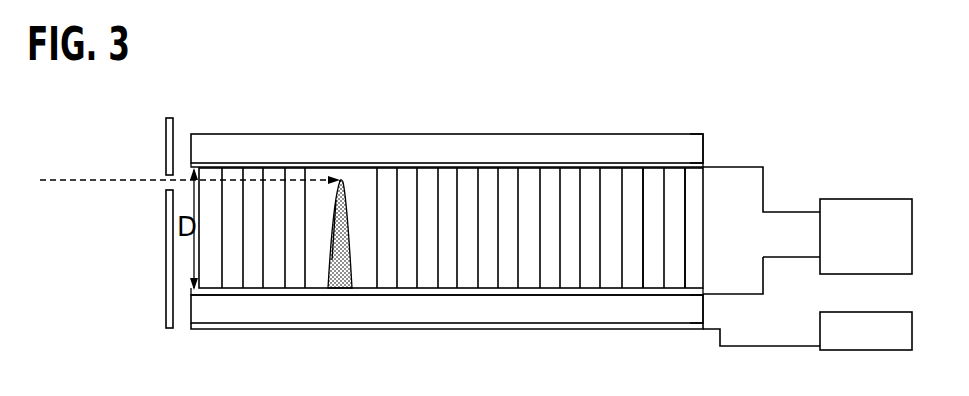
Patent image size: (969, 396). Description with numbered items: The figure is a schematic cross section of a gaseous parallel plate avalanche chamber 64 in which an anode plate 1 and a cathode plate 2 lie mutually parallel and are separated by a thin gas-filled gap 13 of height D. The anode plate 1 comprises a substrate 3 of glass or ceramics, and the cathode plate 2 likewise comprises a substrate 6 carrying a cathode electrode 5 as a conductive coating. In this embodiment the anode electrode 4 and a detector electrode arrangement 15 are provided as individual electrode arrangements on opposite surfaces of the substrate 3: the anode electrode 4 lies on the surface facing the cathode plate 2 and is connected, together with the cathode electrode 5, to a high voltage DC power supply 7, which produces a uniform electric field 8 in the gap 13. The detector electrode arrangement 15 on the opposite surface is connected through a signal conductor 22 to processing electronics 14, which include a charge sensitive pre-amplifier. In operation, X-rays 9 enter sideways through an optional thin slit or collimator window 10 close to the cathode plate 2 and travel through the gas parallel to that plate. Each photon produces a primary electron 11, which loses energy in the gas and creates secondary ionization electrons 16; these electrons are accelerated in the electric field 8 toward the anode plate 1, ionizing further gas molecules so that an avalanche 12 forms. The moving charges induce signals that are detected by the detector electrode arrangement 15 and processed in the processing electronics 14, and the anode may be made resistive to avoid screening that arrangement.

The anode plate 1 is at (396, 318).
The cathode plate 2 is at (394, 128).
The substrate 3 is at (698, 313).
The anode electrode 4 is at (705, 289).
The cathode electrode 5 is at (702, 170).
The substrate 6 is at (692, 150).
The high voltage DC power supply 7 is at (866, 236).
The electric field 8 is at (646, 260).
The X-rays 9 is at (96, 174).
The slit or collimator window 10 is at (161, 162).
The primary electron 11 is at (361, 186).
The avalanche 12 is at (355, 234).
The gas-filled gap 13 is at (451, 228).
The processing electronics 14 is at (866, 331).
The detector electrode arrangement 15 is at (558, 331).
The secondary ionization electrons 16 is at (340, 186).
The signal conductor 22 is at (761, 331).
The gaseous parallel plate avalanche chamber 64 is at (598, 110).